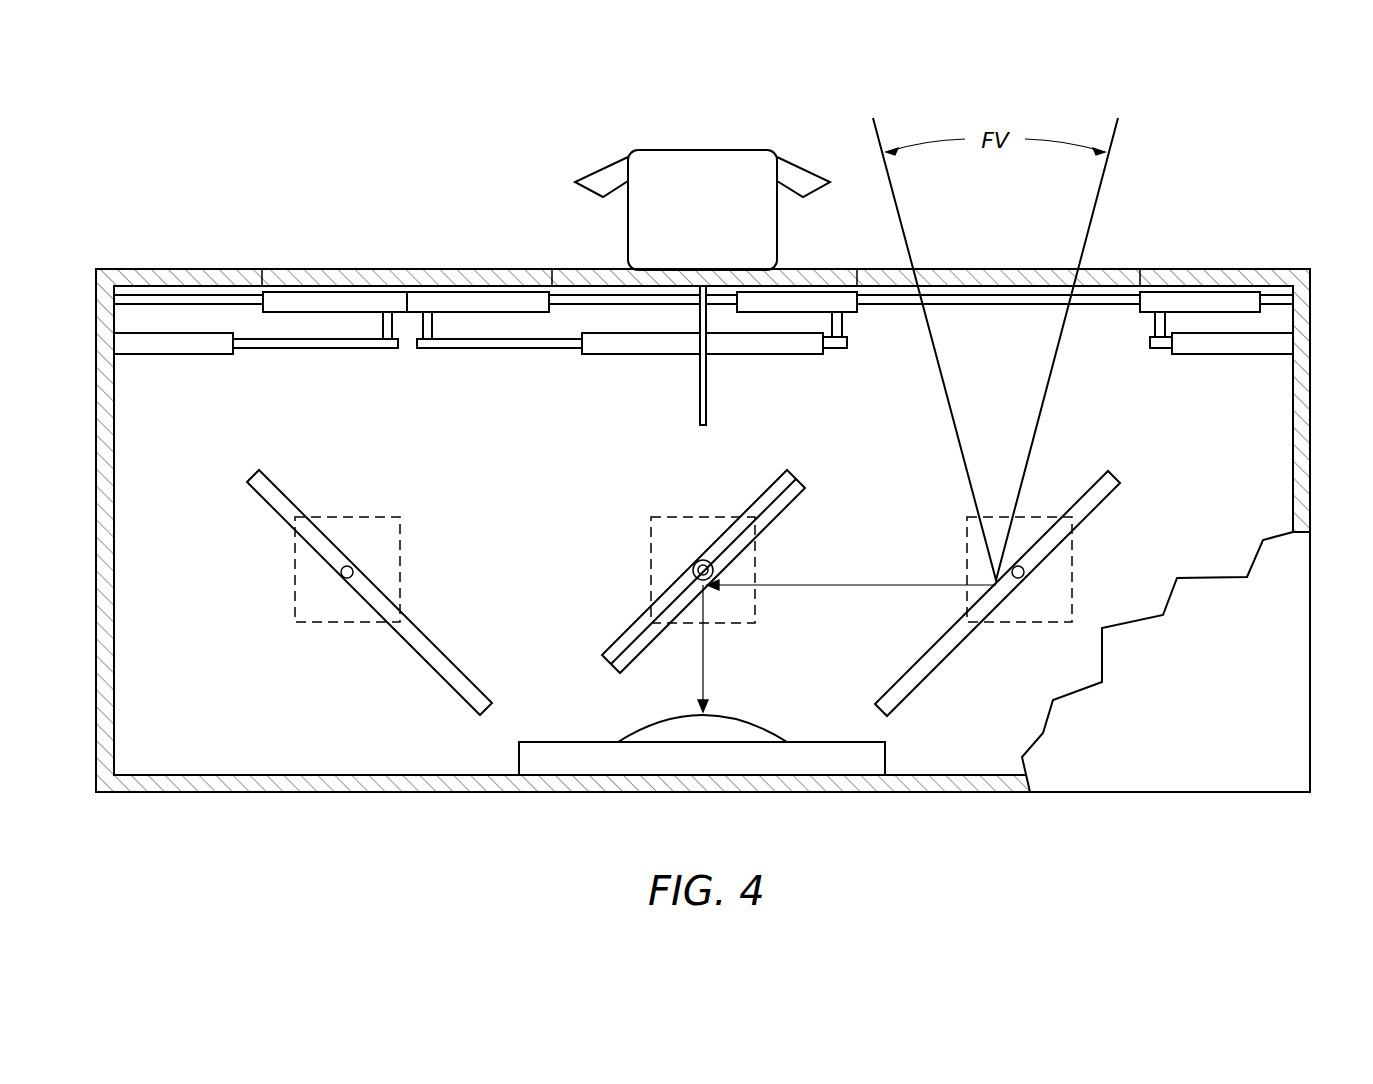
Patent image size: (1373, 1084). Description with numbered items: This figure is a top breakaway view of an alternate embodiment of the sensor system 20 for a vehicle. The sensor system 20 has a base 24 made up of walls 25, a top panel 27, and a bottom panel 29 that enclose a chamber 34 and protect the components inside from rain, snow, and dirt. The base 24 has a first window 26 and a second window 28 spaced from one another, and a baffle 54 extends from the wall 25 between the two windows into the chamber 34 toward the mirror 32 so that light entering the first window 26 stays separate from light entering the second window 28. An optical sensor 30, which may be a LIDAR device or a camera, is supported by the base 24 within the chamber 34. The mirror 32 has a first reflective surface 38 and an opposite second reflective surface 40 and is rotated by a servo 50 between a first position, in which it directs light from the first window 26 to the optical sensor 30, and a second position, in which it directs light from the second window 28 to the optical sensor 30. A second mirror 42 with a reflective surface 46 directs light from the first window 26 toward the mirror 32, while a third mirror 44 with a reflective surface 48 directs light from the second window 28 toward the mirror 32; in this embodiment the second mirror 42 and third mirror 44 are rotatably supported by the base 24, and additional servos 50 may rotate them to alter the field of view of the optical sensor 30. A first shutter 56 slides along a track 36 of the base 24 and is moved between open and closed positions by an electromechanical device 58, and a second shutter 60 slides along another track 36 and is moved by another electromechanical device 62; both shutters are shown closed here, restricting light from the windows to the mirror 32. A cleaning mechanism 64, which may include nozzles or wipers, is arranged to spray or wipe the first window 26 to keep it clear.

The sensor system 20 is at (203, 145).
The base 24 is at (1312, 315).
The walls 25 is at (207, 270).
The first window 26 is at (983, 270).
The top panel 27 is at (1168, 712).
The second window 28 is at (421, 269).
The bottom panel 29 is at (1263, 443).
The optical sensor 30 is at (585, 750).
The mirror 32 is at (622, 643).
The chamber 34 is at (426, 461).
The tracks 36 is at (135, 300).
The first reflective surface 38 is at (777, 512).
The second reflective surface 40 is at (768, 484).
The second mirror 42 is at (1090, 513).
The third mirror 44 is at (278, 515).
The reflective surface 46 is at (1090, 482).
The reflective surface 48 is at (272, 487).
The servo 50 is at (403, 557).
The baffle 54 is at (698, 400).
The first shutter 56 is at (830, 300).
The electromechanical device 58 is at (795, 345).
The second shutter 60 is at (297, 300).
The electromechanical device 62 is at (170, 345).
The cleaning mechanism 64 is at (722, 165).